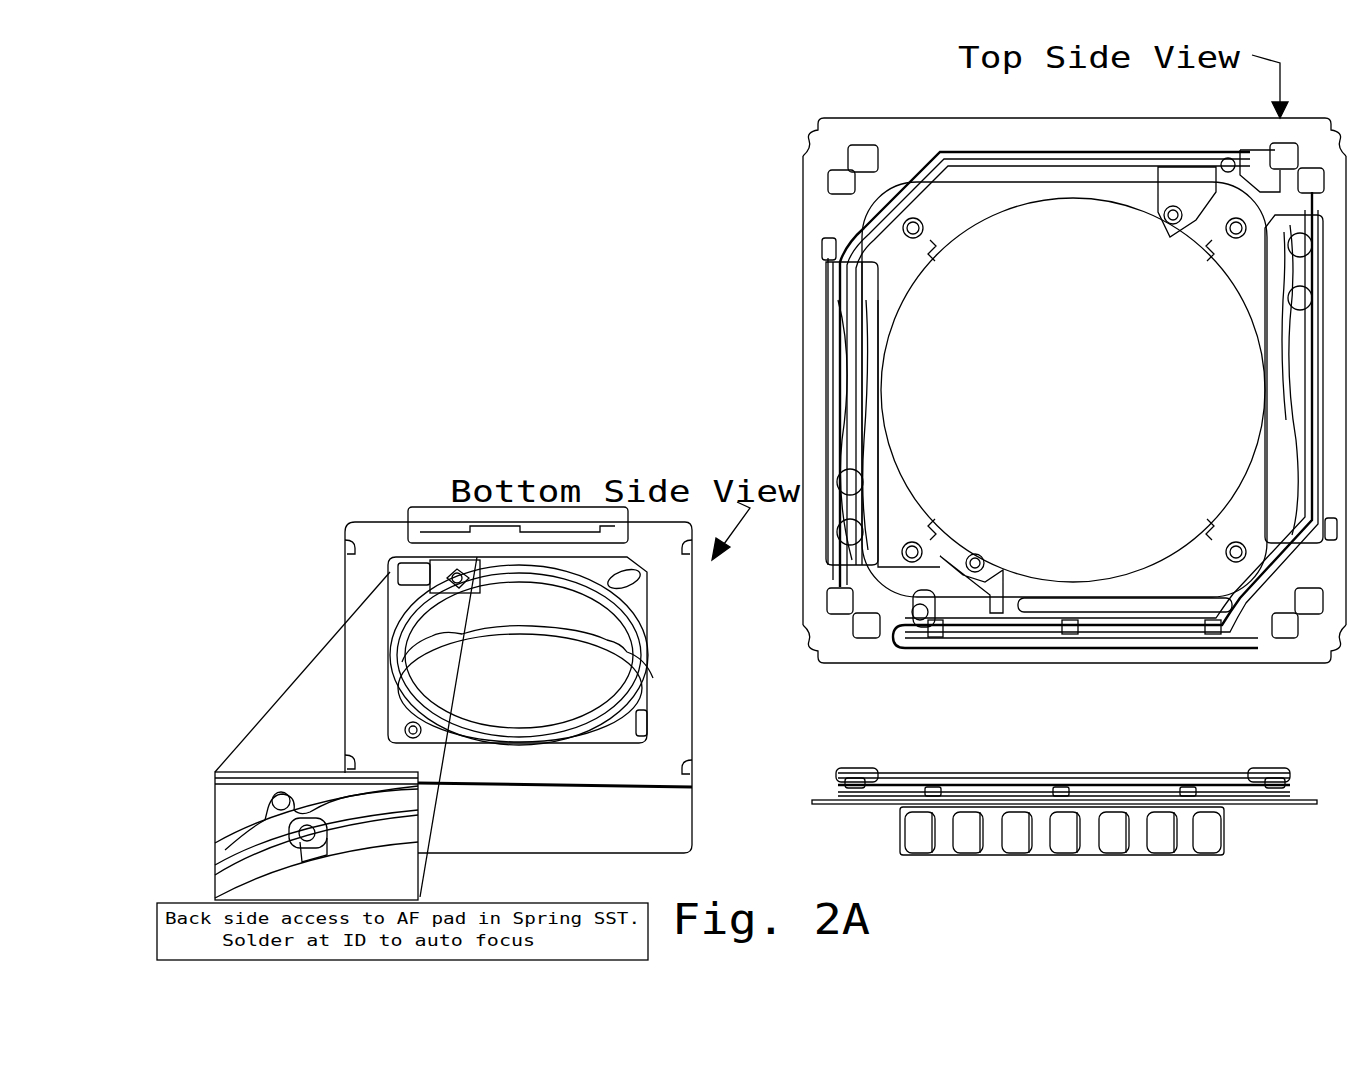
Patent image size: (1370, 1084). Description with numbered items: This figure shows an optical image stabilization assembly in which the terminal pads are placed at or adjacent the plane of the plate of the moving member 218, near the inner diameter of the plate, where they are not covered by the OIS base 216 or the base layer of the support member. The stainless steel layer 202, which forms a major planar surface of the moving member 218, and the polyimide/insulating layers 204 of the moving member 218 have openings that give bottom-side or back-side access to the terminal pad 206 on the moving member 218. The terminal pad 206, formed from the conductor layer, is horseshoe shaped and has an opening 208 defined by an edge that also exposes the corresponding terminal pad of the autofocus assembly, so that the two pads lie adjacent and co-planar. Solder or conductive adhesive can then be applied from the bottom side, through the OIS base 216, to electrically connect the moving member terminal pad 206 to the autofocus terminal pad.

The stainless steel layer 202 is at (413, 570).
The polyimide/insulating layers 204 is at (996, 572).
The terminal pad 206 is at (1074, 390).
The opening 208 is at (1170, 224).
The OIS base 216 is at (668, 653).
The moving member 218 is at (830, 775).